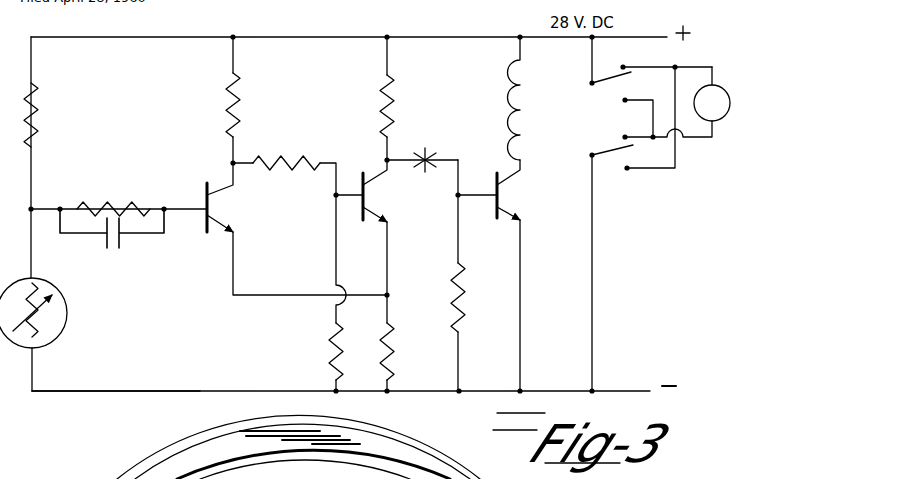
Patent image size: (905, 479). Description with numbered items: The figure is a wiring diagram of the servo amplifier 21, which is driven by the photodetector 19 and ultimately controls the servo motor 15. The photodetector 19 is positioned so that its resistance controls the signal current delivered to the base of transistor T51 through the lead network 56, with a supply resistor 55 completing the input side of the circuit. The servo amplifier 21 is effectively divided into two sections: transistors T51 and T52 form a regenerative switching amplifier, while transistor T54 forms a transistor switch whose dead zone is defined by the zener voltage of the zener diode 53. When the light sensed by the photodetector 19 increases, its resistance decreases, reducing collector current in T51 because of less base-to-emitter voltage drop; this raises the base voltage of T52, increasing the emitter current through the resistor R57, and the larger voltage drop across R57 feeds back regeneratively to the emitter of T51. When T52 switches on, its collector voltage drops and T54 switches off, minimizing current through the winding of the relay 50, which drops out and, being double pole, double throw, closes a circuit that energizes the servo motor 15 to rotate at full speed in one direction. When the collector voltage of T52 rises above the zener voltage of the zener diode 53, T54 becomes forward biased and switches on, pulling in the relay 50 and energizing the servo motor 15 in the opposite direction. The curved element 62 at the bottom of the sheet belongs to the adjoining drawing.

The resistor 55 is at (38, 114).
The resistor with parallel capacitor 56 is at (122, 204).
The transistor T51 is at (227, 216).
The transistor T52 is at (389, 211).
The transistor T54 is at (512, 203).
The breakdown (zener) diode 53 is at (440, 151).
The resistor R57 is at (396, 358).
The photoconductive cell 19 is at (67, 318).
The common return conductor 21 is at (100, 396).
The relay switch 50 is at (620, 122).
The lamp 15 is at (716, 92).
The lens element 62 is at (468, 472).